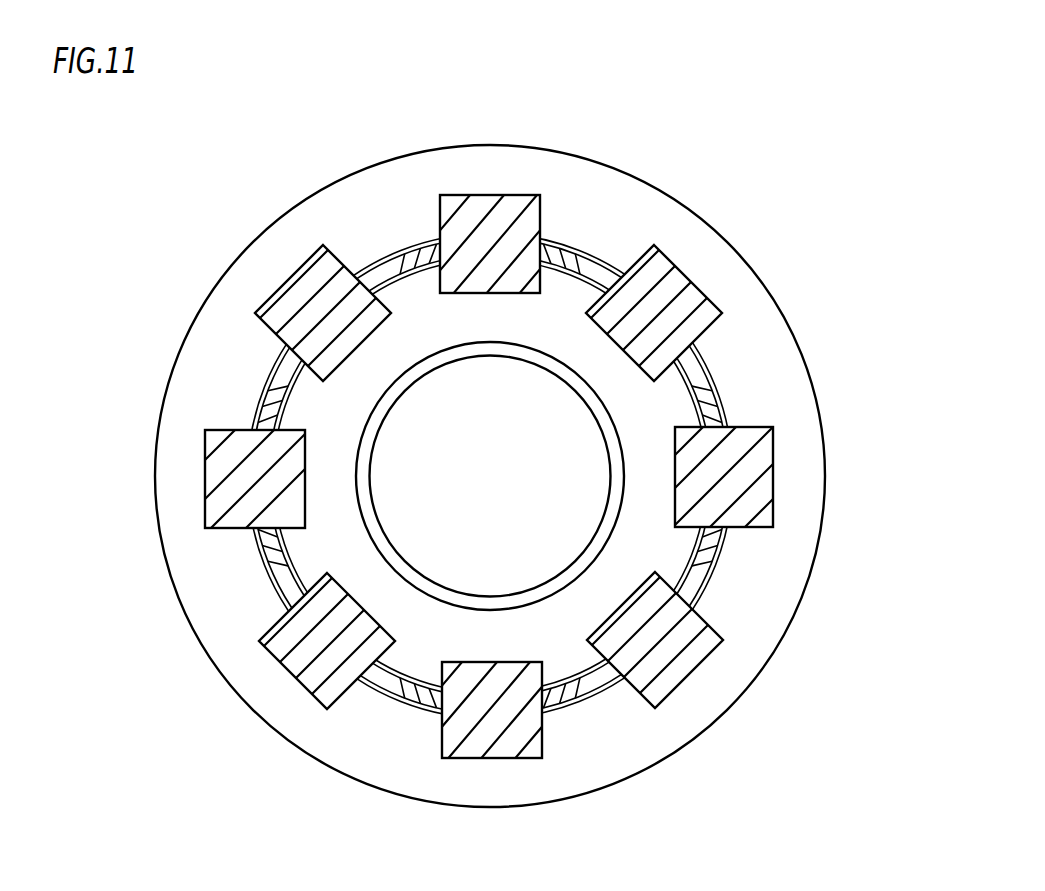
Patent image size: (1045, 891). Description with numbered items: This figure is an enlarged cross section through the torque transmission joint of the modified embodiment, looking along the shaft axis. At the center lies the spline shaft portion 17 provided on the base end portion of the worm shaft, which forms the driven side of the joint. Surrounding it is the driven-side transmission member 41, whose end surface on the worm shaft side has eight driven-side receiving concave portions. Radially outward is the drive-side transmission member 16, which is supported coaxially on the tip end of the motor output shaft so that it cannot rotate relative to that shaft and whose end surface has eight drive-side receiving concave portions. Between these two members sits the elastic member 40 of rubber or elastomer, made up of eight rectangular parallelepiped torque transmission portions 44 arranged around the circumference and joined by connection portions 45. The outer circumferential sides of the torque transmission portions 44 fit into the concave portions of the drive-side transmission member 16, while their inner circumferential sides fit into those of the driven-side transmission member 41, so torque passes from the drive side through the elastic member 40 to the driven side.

The drive-side transmission member 16 is at (490, 459).
The spline shaft portion 17 is at (561, 614).
The elastic member 40 is at (530, 448).
The driven-side transmission member 41 is at (369, 579).
The torque transmission portion 44 is at (205, 503).
The connection portion 45 is at (574, 476).